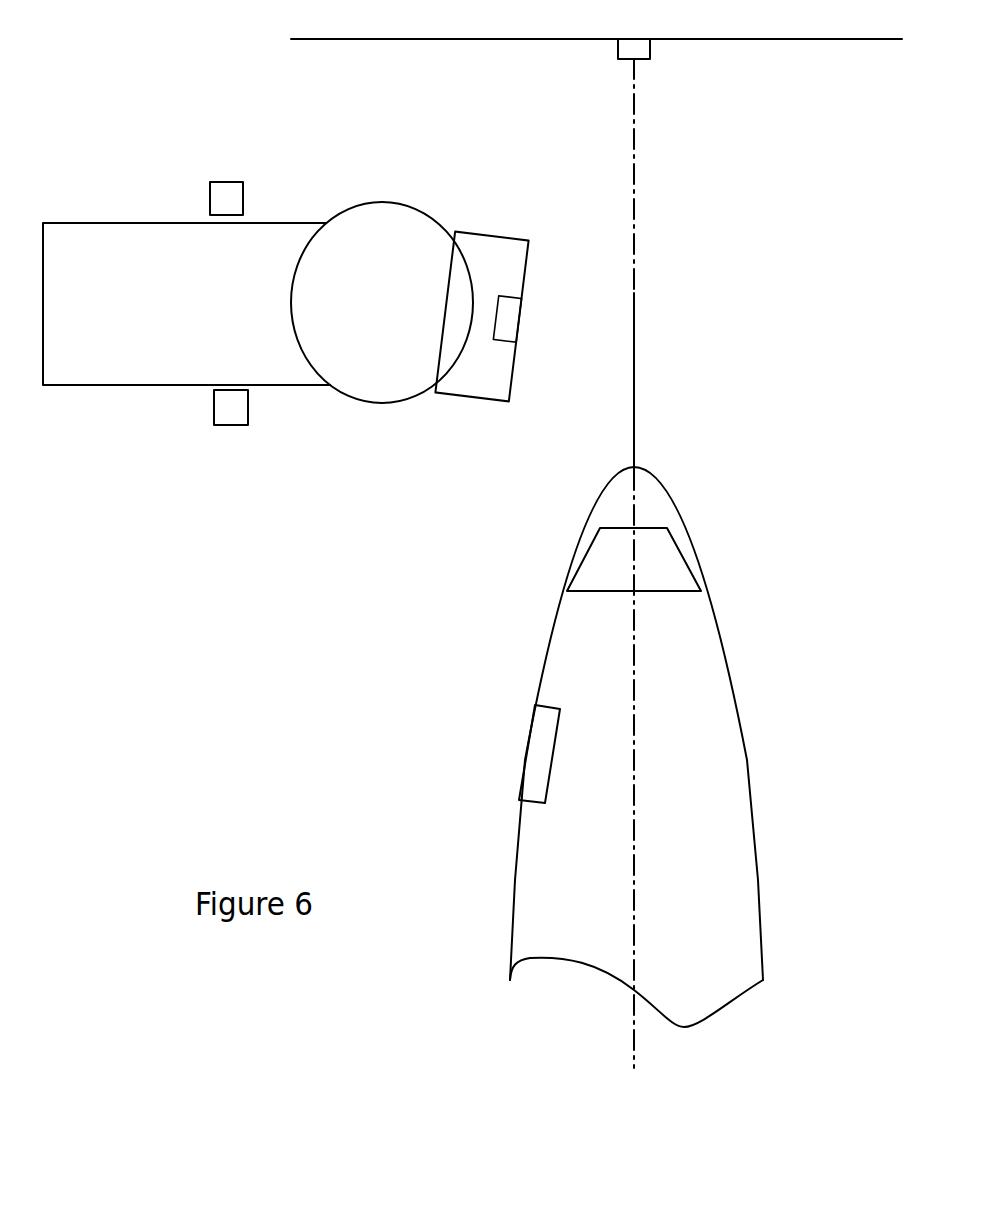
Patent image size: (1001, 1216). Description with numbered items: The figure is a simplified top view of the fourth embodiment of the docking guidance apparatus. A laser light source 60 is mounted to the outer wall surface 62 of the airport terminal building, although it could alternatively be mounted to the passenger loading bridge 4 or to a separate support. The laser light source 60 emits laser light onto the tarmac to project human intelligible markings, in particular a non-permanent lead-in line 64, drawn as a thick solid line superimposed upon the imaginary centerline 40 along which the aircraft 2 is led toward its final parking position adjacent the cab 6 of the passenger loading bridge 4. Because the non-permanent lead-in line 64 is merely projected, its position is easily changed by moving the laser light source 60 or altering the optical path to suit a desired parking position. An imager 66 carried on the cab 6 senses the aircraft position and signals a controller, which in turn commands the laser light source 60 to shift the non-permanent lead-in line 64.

The aircraft 2 is at (680, 786).
The passenger loading bridge 4 is at (192, 443).
The cab 6 is at (487, 401).
The imaginary lead-in line 40 is at (636, 259).
The laser light source 60 is at (645, 60).
The outer wall surface 62 is at (808, 40).
The non-permanent lead-in line 64 is at (636, 444).
The imager 66 is at (521, 310).